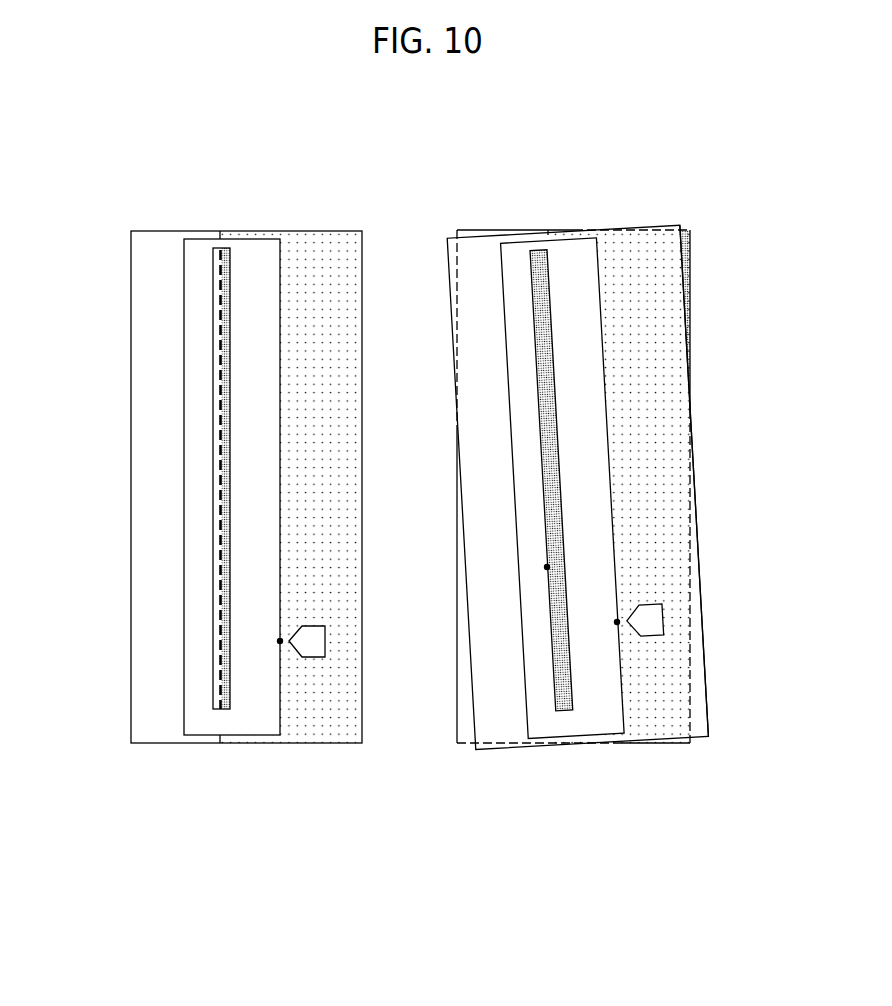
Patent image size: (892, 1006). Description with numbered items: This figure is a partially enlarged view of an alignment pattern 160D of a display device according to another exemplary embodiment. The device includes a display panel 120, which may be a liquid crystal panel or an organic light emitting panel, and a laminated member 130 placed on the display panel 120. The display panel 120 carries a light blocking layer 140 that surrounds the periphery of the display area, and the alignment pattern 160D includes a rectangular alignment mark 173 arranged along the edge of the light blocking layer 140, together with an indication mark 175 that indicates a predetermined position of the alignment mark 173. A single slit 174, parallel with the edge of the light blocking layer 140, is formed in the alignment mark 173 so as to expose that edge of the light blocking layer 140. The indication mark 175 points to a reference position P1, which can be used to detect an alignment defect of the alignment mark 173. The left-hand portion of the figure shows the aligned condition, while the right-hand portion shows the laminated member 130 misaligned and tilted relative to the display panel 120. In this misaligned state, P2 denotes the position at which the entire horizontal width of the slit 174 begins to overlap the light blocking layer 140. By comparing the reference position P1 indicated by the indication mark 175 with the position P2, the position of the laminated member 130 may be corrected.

The alignment pattern 160D is at (287, 257).
The alignment mark 173 is at (192, 650).
The slit 174 is at (218, 442).
The indication mark 175 is at (318, 642).
The light blocking layer 140 is at (328, 728).
The display panel 120 is at (686, 226).
The laminated member 130 is at (707, 625).
The reference position P1 is at (281, 643).
The overlap start position P2 is at (548, 567).